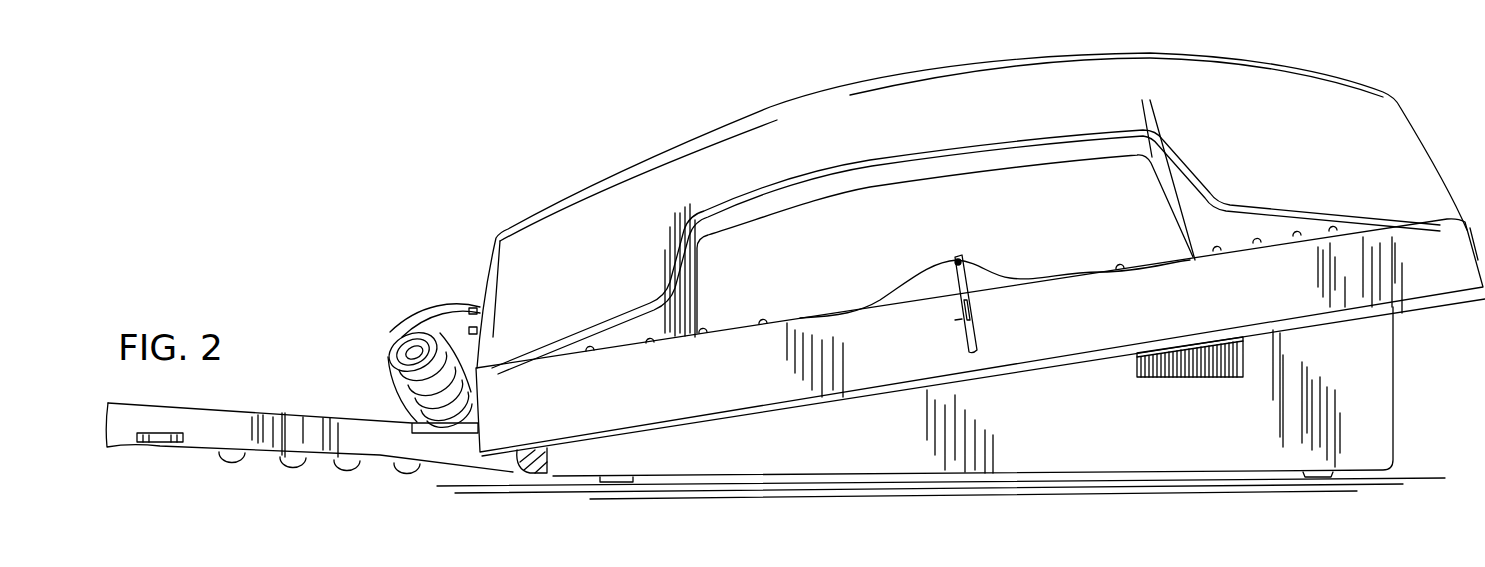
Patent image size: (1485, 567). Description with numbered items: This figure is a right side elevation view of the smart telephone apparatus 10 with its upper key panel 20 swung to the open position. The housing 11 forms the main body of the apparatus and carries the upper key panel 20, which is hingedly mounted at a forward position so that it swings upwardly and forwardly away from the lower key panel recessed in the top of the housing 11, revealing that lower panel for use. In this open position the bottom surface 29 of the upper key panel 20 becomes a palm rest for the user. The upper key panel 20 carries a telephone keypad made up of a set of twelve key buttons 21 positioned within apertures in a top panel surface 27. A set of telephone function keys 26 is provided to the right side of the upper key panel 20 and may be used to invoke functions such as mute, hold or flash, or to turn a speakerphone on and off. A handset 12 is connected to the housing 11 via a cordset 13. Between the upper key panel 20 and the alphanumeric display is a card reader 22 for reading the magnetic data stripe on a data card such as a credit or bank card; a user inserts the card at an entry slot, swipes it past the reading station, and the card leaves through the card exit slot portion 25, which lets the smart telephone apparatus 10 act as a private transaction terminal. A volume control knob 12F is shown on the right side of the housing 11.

The smart telephone apparatus 10 is at (1447, 404).
The housing 11 is at (657, 410).
The handset 12 is at (670, 172).
The volume control knob 12F is at (1210, 362).
The cordset 13 is at (393, 335).
The upper key panel 20 is at (213, 416).
The key buttons 21 is at (247, 460).
The card reader 22 is at (960, 262).
The card exit slot portion 25 is at (963, 323).
The telephone function keys 26 is at (765, 322).
The top panel surface 27 is at (467, 467).
The bottom surface 29 is at (307, 413).